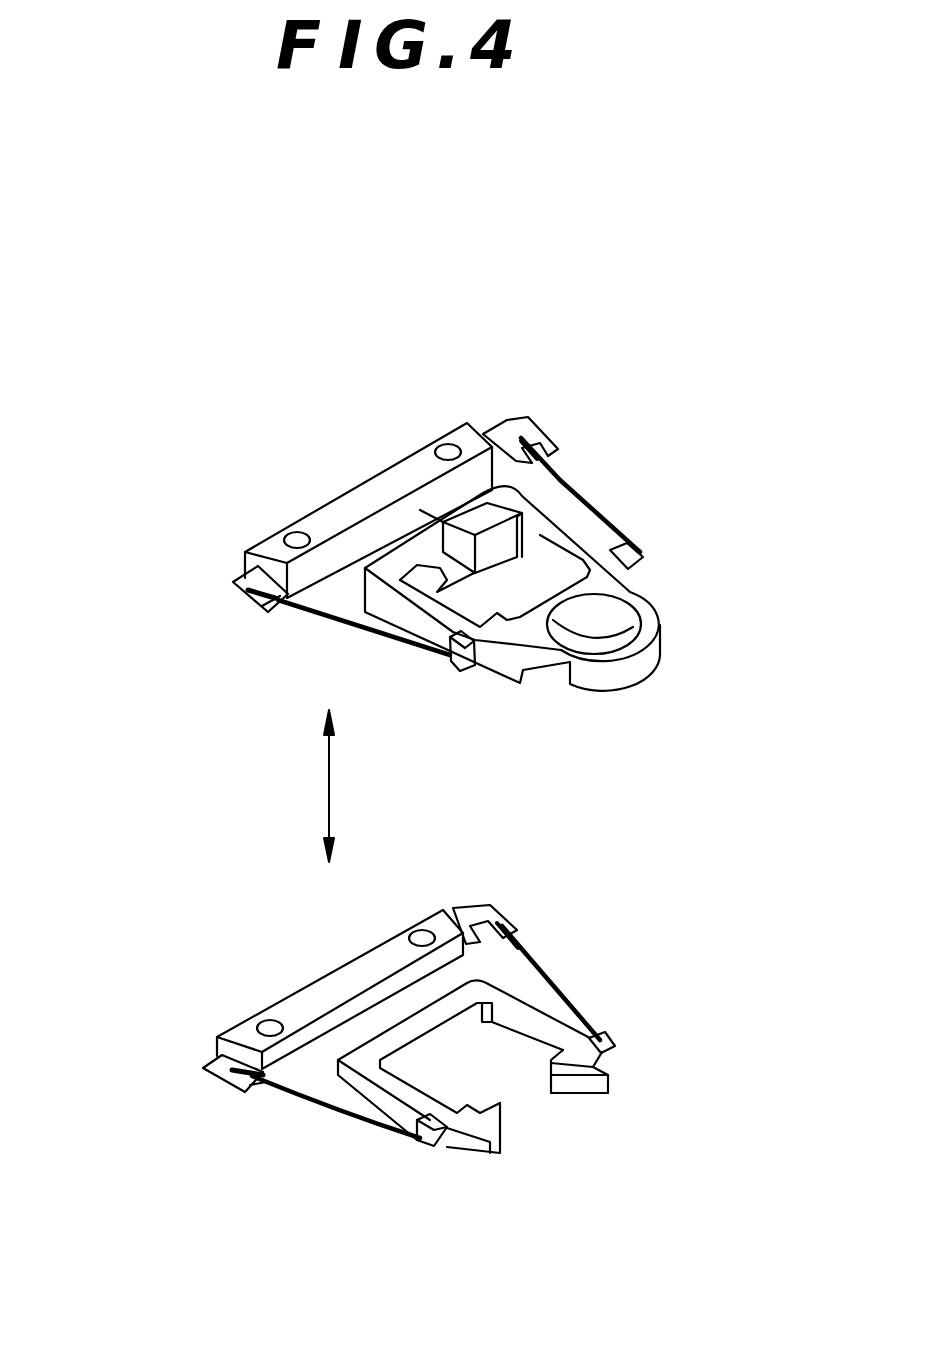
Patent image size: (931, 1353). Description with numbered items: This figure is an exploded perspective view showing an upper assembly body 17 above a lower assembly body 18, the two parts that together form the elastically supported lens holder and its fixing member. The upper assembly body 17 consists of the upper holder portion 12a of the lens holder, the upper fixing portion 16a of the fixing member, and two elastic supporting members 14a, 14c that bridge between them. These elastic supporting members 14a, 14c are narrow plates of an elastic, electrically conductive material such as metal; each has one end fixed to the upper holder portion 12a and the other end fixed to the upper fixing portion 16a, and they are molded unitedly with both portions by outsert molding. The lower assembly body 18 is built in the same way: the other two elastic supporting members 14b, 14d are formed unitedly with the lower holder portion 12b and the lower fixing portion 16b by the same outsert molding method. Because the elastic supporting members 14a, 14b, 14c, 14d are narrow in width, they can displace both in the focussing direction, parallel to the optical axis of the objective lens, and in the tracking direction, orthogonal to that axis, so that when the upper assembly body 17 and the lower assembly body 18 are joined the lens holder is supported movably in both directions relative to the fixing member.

The upper assembly body 17 is at (262, 474).
The upper fixing portion 16a is at (373, 490).
The elastic supporting member 14a is at (575, 480).
The elastic supporting member 14c is at (347, 623).
The upper holder portion 12a is at (612, 582).
The lower assembly body 18 is at (268, 1137).
The lower fixing portion 16b is at (297, 1003).
The elastic supporting member 14b is at (543, 965).
The elastic supporting member 14d is at (357, 1120).
The lower holder portion 12b is at (610, 1063).